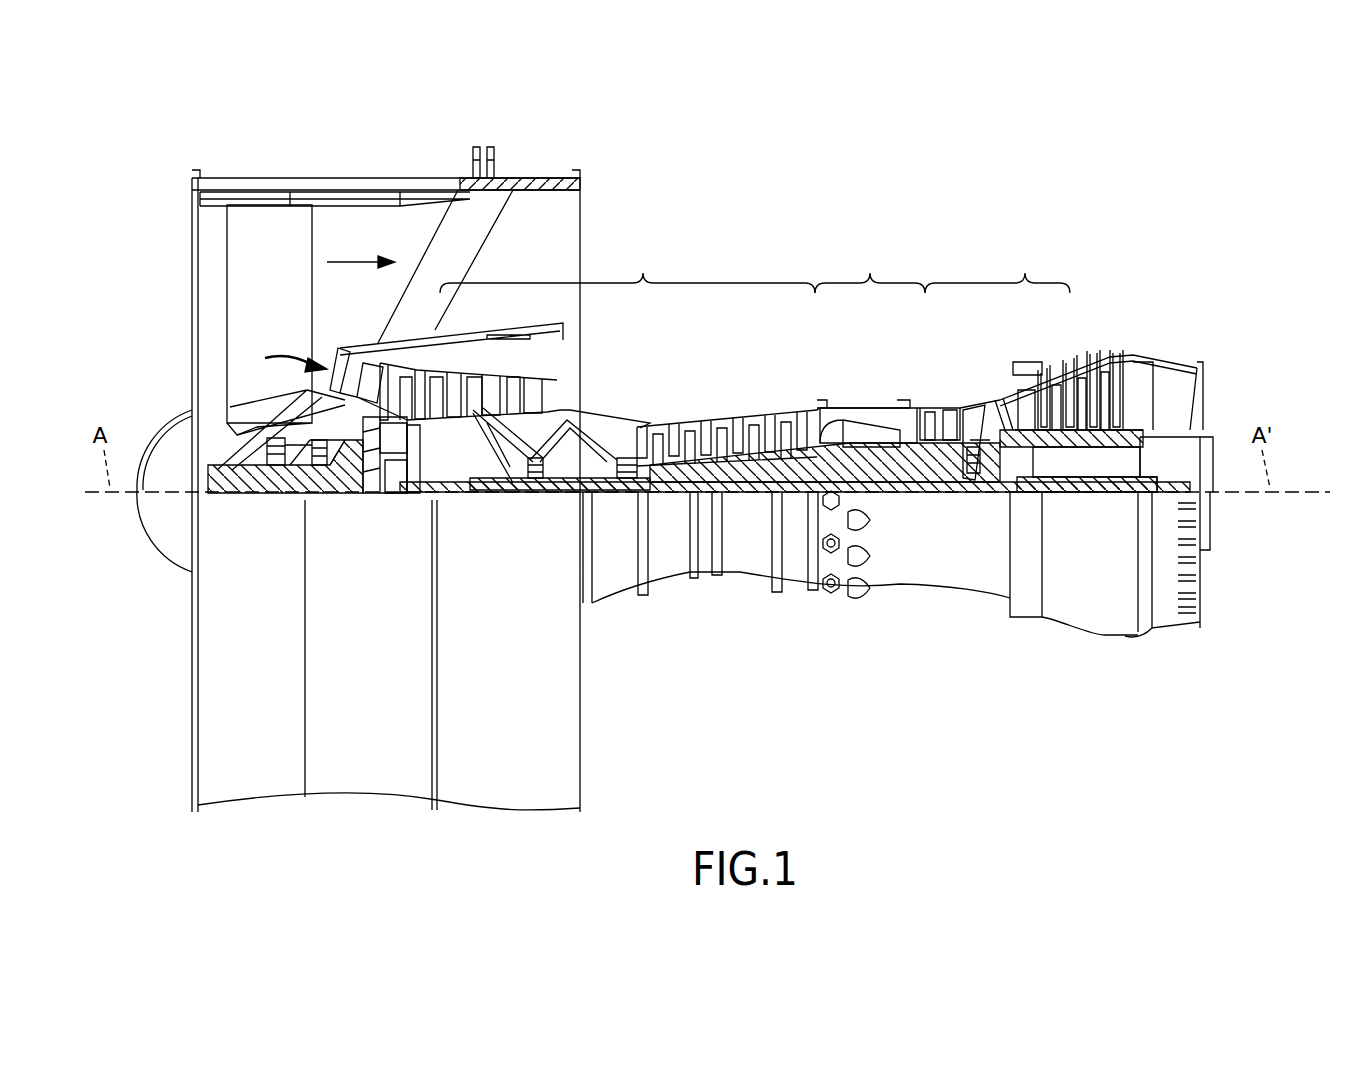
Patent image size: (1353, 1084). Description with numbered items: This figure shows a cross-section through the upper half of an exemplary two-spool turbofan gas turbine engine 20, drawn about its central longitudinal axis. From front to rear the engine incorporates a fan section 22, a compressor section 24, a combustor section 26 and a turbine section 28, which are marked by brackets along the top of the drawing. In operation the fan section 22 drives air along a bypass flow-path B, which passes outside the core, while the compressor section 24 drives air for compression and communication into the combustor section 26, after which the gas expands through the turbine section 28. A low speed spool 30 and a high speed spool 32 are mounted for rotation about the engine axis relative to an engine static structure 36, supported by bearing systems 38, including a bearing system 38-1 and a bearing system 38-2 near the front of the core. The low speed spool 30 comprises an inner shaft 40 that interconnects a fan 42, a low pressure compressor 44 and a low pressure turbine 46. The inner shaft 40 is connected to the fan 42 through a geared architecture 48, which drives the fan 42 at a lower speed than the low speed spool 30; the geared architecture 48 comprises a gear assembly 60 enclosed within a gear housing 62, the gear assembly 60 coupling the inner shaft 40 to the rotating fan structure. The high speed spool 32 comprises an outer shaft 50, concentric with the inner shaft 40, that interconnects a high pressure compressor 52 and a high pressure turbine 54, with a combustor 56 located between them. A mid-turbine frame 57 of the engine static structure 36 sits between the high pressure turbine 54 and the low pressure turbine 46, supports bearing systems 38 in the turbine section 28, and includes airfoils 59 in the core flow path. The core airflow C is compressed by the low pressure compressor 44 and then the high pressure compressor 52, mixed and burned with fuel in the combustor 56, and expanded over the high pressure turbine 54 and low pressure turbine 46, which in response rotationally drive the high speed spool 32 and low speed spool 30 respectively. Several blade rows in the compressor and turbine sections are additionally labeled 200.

The gas turbine engine 20 is at (930, 206).
The fan section 22 is at (432, 160).
The compressor section 24 is at (627, 269).
The combustor section 26 is at (870, 269).
The turbine section 28 is at (997, 269).
The low speed spool 30 is at (752, 525).
The high speed spool 32 is at (790, 465).
The engine static structure 36 is at (168, 815).
The bearing system 38 is at (975, 495).
The bearing system 38-1 is at (280, 470).
The bearing system 38-2 is at (525, 480).
The inner shaft 40 is at (605, 520).
The fan 42 is at (275, 307).
The low pressure compressor section 44 is at (545, 382).
The low pressure turbine section 46 is at (1080, 375).
The geared architecture 48 is at (400, 522).
The outer shaft 50 is at (858, 488).
The high pressure compressor 52 is at (755, 420).
The high pressure turbine section 54 is at (944, 410).
The combustor 56 is at (880, 430).
The mid-turbine frame 57 is at (990, 425).
The airfoils 59 is at (1000, 440).
The gear assembly 60 is at (405, 470).
The gear housing 62 is at (400, 432).
The blade array 200 is at (460, 374).
The bypass flow-path B is at (358, 268).
The core airflow C is at (285, 358).